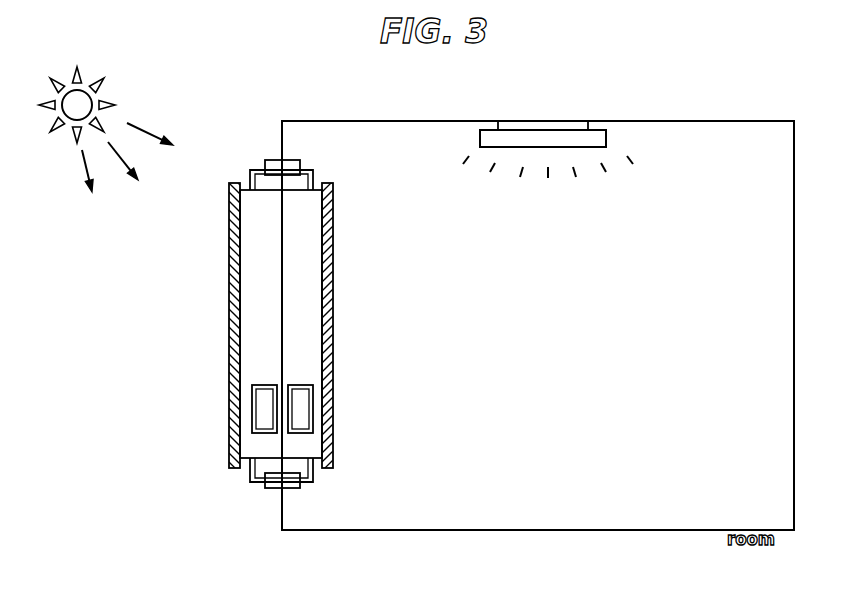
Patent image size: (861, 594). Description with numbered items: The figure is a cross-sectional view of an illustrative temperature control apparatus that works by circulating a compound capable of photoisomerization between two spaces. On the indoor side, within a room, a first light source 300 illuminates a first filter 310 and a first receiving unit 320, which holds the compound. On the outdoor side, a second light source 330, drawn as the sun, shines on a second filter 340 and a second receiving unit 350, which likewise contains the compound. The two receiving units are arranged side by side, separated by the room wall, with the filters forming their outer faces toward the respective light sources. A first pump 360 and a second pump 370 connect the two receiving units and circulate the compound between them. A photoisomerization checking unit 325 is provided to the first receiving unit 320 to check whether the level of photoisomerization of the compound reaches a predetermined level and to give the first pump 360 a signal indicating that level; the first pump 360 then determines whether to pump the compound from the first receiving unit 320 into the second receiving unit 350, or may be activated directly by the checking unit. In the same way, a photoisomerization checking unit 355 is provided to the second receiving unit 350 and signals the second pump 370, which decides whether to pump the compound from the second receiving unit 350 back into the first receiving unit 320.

The first light source 300 is at (597, 138).
The first filter 310 is at (326, 232).
The first receiving unit 320 is at (307, 316).
The photoisomerization checking unit 325 is at (300, 405).
The second light source 330 is at (86, 101).
The second filter 340 is at (236, 267).
The second receiving unit 350 is at (258, 350).
The photoisomerization checking unit 355 is at (260, 403).
The first pump 360 is at (290, 164).
The second pump 370 is at (272, 482).